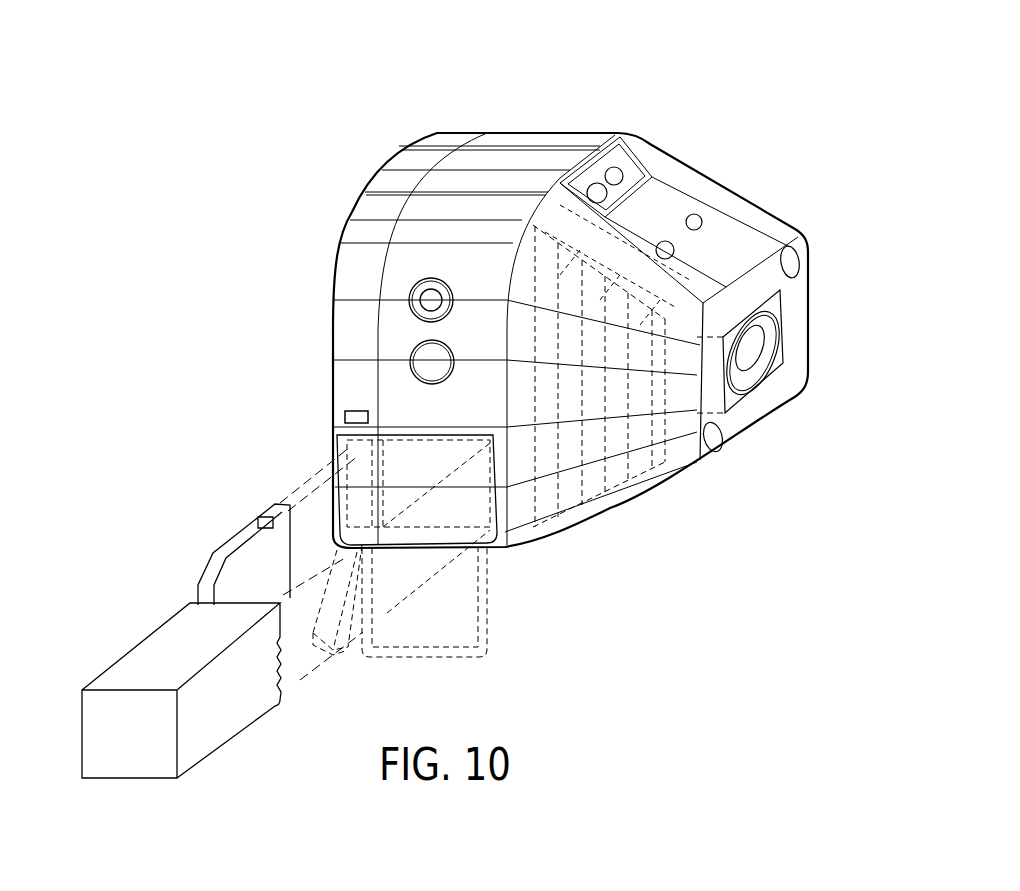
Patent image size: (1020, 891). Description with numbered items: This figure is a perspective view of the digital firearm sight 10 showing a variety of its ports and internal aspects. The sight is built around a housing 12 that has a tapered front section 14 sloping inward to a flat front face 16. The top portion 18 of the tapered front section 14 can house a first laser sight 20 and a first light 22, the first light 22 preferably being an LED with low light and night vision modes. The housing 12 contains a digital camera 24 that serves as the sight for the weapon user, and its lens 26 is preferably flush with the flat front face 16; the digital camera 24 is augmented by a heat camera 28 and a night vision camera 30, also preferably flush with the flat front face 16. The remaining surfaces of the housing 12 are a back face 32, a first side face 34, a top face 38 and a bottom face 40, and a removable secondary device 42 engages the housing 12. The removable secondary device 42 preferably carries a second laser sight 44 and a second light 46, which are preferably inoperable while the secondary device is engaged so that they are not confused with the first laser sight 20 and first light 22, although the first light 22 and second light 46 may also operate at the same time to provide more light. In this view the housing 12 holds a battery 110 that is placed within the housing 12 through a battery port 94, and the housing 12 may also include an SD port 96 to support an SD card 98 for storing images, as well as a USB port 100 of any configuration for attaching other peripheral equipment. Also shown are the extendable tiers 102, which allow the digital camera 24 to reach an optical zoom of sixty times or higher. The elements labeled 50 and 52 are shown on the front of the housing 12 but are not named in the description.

The digital firearm sight 10 is at (238, 78).
The housing 12 is at (348, 228).
The tapered front section 14 is at (710, 193).
The flat front face 16 is at (778, 395).
The top portion 18 is at (665, 195).
The first laser sight 20 is at (673, 249).
The first light 22 is at (701, 221).
The digital camera 24 is at (773, 349).
The lens 26 is at (760, 340).
The heat camera 28 is at (708, 447).
The night vision camera 30 is at (792, 262).
The back face 32 is at (330, 353).
The first side face 34 is at (406, 267).
The top face 38 is at (496, 140).
The bottom face 40 is at (455, 548).
The removable secondary device 42 is at (418, 168).
The second laser sight 44 is at (594, 185).
The second light 46 is at (615, 180).
The power button 50 is at (420, 296).
The mode button 52 is at (415, 370).
The battery port 94 is at (497, 524).
The SD port 96 is at (355, 443).
The SD card 98 is at (230, 540).
The USB port 100 is at (345, 417).
The extendable tiers 102 is at (627, 483).
The battery 110 is at (263, 707).